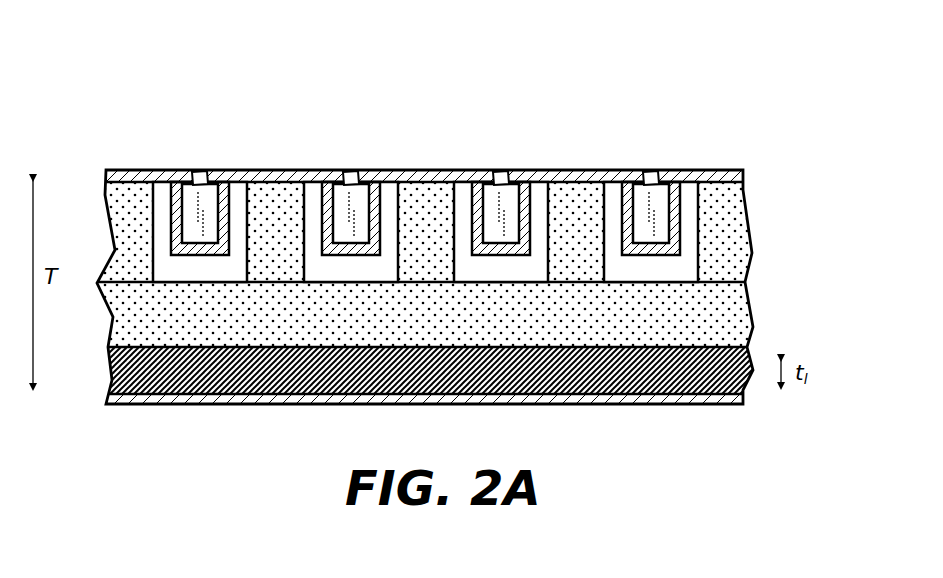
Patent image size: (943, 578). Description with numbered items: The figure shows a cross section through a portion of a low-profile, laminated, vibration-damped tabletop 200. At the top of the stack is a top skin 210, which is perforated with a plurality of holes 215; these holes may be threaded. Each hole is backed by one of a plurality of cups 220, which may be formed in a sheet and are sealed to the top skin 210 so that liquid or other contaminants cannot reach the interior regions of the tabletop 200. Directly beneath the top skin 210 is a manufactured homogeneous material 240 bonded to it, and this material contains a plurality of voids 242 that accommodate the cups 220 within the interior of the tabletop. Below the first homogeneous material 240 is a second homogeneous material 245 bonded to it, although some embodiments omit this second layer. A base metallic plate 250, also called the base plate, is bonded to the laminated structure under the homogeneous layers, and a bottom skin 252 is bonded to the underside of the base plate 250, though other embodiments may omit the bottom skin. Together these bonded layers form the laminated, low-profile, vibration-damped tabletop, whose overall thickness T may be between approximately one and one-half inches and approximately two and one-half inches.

The tabletop 200 is at (443, 248).
The top skin 210 is at (163, 169).
The holes 215 is at (198, 169).
The cups 220 is at (425, 192).
The manufactured homogeneous material 240 is at (728, 253).
The voids 242 is at (535, 200).
The second homogeneous material 245 is at (727, 328).
The base metallic plate 250 is at (107, 374).
The bottom skin 252 is at (260, 400).